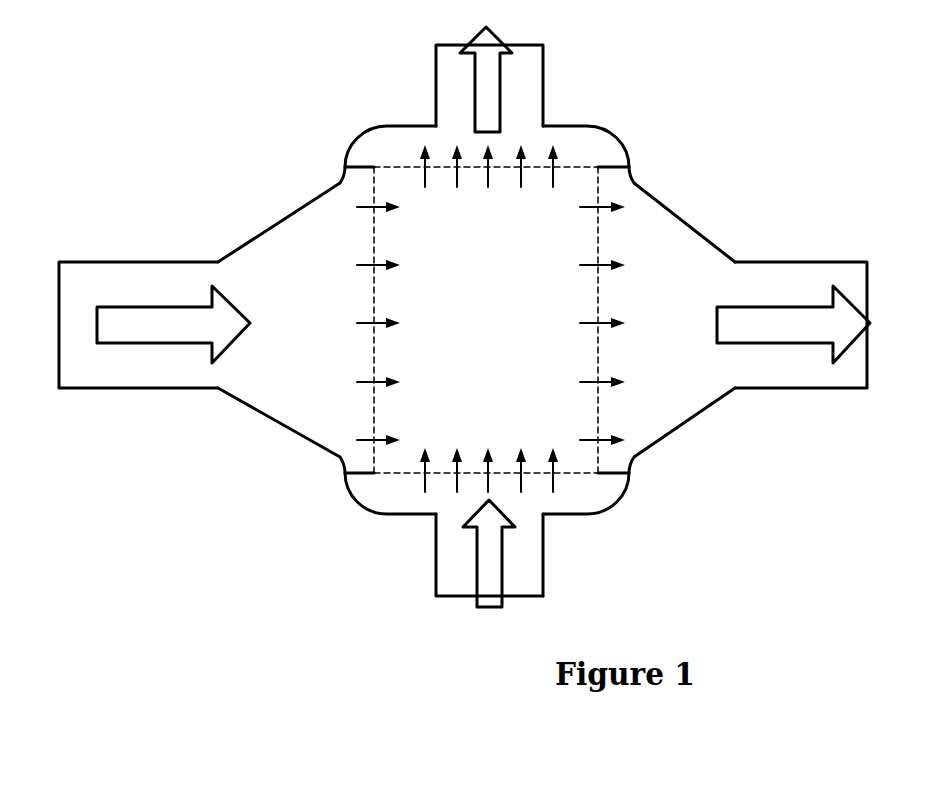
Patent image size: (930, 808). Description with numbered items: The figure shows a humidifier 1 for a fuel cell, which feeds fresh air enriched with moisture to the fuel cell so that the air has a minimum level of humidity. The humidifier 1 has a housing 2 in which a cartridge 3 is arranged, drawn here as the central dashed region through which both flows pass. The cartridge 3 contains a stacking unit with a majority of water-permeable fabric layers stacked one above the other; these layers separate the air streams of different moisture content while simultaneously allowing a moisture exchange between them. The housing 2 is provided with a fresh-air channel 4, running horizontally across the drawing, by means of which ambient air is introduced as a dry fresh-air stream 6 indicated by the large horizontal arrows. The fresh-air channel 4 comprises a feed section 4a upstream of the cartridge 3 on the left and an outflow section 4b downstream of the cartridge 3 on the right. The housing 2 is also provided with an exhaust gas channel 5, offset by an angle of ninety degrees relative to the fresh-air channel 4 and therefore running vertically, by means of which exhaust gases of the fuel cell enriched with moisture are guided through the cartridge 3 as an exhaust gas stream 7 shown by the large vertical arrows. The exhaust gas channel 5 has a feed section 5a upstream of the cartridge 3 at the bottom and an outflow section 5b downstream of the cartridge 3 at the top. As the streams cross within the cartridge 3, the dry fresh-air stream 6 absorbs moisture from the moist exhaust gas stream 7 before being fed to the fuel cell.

The humidifier 1 is at (288, 156).
The housing 2 is at (178, 262).
The cartridge 3 is at (601, 350).
The fresh-air channel 4 is at (207, 404).
The feed section 4a is at (110, 388).
The outflow section 4b is at (793, 388).
The exhaust gas channel 5 is at (556, 547).
The feed section 5a is at (436, 561).
The outflow section 5b is at (436, 76).
The fresh-air stream 6 is at (128, 307).
The exhaust gas stream 7 is at (500, 78).